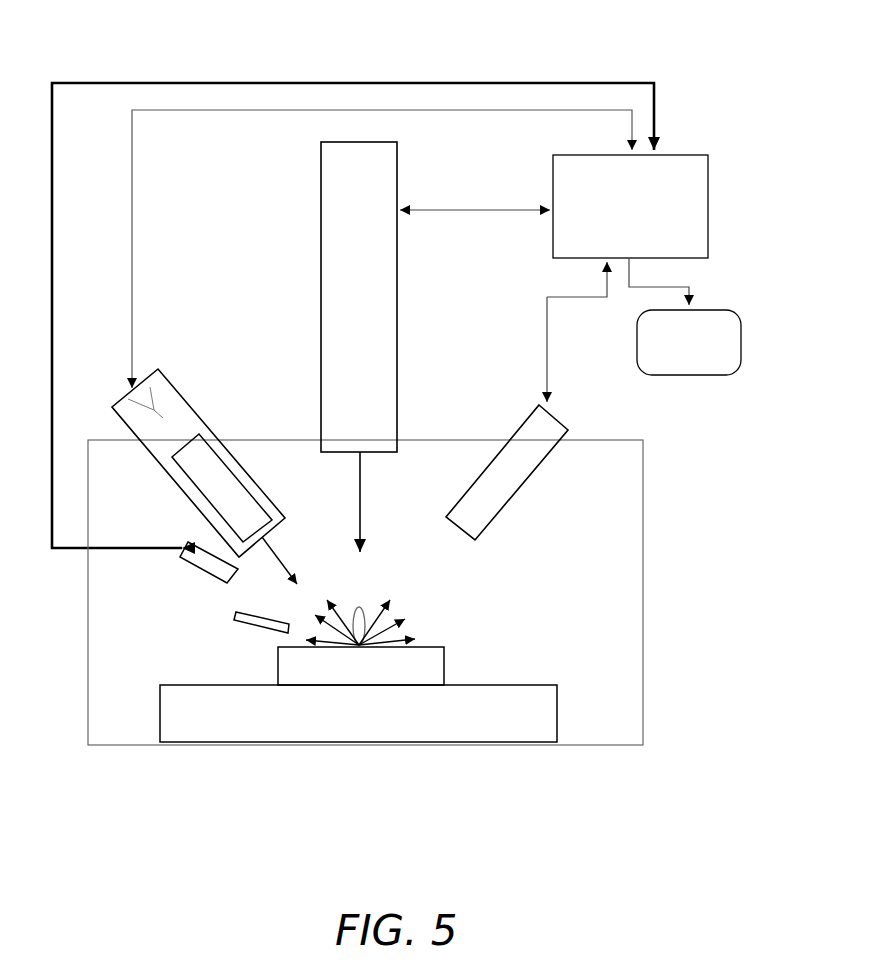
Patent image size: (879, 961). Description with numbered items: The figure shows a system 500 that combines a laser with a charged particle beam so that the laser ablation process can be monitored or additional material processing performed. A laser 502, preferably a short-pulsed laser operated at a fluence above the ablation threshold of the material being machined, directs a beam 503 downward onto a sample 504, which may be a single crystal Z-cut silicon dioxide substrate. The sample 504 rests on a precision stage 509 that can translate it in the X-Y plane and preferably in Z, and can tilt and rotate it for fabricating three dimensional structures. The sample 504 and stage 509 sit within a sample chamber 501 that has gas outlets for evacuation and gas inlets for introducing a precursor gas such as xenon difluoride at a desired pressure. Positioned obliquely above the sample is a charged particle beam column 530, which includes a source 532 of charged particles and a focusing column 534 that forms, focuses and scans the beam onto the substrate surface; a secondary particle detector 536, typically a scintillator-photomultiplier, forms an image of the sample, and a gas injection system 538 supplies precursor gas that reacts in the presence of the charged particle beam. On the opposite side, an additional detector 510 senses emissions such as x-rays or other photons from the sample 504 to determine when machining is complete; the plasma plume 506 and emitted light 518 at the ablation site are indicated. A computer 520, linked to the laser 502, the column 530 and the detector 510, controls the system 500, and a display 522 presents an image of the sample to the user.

The system 500 is at (150, 42).
The sample chamber 501 is at (634, 518).
The laser 502 is at (397, 330).
The beam 503 is at (360, 470).
The sample 504 is at (435, 676).
The plasma 506 is at (361, 606).
The precision stage 509 is at (555, 691).
The additional detector 510 is at (530, 476).
The emitted light 518 is at (385, 623).
The computer 520 is at (700, 155).
The display 522 is at (703, 309).
The charged particle beam column 530 is at (198, 407).
The source 532 is at (150, 387).
The focusing column 534 is at (198, 512).
The secondary particle detector 536 is at (212, 580).
The gas injection system 538 is at (250, 625).